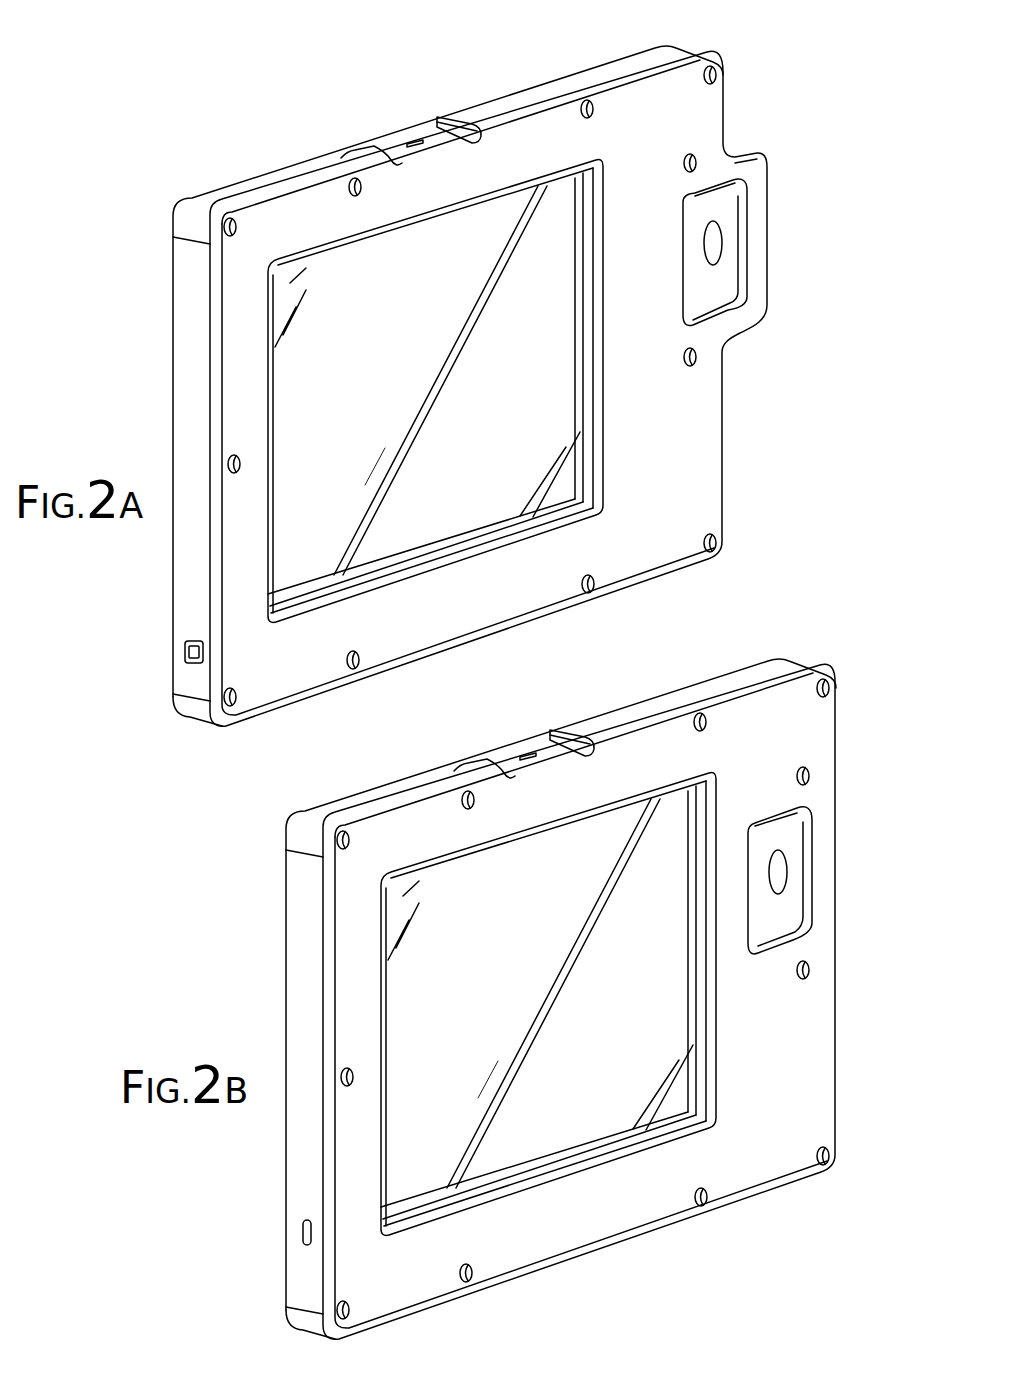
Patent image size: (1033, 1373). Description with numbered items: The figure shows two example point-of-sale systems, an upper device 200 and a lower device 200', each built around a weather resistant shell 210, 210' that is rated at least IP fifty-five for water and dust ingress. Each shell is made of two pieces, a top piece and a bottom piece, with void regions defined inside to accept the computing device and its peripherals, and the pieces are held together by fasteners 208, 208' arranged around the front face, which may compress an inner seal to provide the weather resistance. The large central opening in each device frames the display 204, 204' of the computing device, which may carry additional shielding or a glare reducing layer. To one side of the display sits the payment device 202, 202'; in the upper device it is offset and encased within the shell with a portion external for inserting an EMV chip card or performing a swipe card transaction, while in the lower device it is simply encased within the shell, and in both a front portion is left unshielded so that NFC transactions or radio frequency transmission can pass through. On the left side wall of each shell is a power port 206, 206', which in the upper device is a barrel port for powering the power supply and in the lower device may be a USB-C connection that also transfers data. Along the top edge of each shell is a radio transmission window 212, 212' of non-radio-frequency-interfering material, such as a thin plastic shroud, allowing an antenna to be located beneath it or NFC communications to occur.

In FIG. 2A, the point-of-sale system 200 is at (466, 365).
In FIG. 2A, the payment device 202 is at (747, 252).
In FIG. 2A, the display 204 is at (435, 391).
In FIG. 2A, the power port 206 is at (162, 631).
In FIG. 2A, the fasteners 208 is at (498, 386).
In FIG. 2A, the weather resistant shell 210 is at (471, 386).
In FIG. 2A, the radio transmission window 212 is at (484, 145).
In FIG. 2B, the point-of-sale system 200' is at (556, 976).
In FIG. 2B, the payment device 202' is at (816, 880).
In FIG. 2B, the display 204' is at (548, 1004).
In FIG. 2B, the power port 206' is at (269, 1211).
In FIG. 2B, the fasteners 208' is at (583, 999).
In FIG. 2B, the weather resistant shell 210' is at (561, 999).
In FIG. 2B, the radio transmission window 212' is at (565, 771).